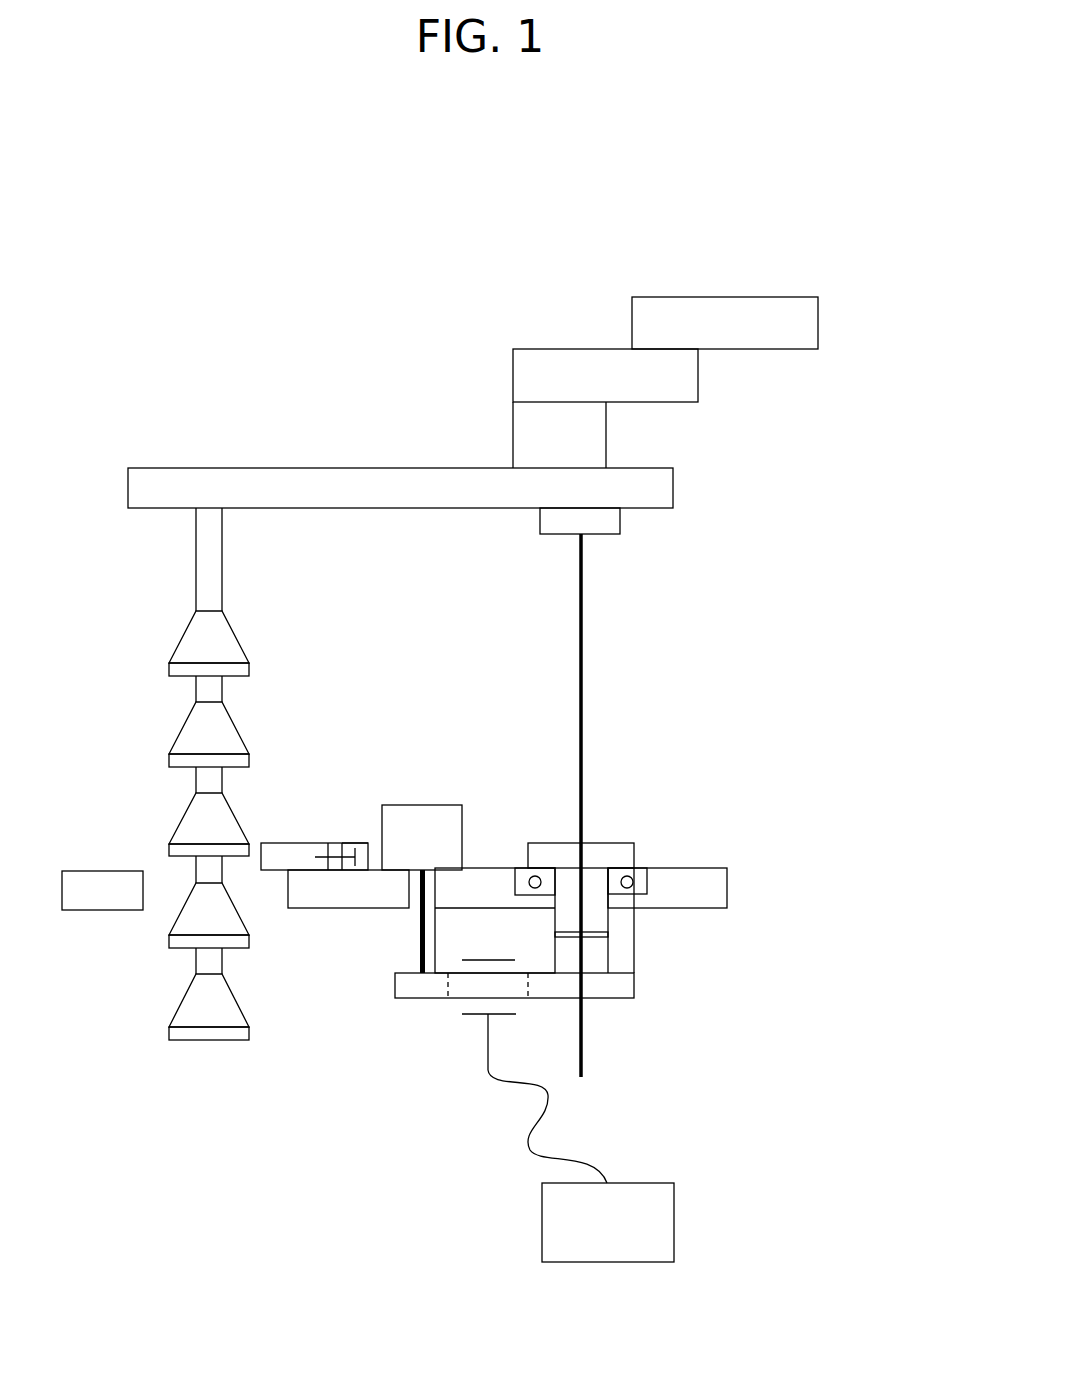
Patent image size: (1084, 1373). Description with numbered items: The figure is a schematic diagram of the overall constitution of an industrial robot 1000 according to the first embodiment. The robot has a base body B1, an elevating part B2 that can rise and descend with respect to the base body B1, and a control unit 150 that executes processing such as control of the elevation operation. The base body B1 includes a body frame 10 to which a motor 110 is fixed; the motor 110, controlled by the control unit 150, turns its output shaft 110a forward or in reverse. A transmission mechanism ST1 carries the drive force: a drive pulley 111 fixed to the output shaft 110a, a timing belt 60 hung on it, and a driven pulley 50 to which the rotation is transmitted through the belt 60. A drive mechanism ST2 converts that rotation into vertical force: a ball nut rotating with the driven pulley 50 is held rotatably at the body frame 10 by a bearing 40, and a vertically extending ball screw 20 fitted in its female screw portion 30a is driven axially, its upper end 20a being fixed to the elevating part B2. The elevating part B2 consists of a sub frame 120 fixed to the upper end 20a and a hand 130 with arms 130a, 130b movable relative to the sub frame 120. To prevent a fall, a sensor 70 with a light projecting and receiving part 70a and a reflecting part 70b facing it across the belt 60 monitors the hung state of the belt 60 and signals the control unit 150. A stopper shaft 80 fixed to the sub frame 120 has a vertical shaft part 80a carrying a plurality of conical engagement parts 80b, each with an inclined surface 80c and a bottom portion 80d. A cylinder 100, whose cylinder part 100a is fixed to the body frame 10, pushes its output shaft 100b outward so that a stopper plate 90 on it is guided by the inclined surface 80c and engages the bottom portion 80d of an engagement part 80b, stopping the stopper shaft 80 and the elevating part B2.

The industrial robot 1000 is at (173, 256).
The body frame 10 is at (705, 868).
The ball screw 20 is at (583, 675).
The upper end 20a is at (578, 540).
The female screw portion 30a is at (606, 852).
The bearing 40 is at (637, 886).
The driven pulley 50 is at (618, 993).
The timing belt 60 is at (458, 992).
The sensor 70 is at (503, 990).
The light projecting and receiving part 70a is at (512, 1014).
The reflecting part 70b is at (487, 960).
The stopper shaft 80 is at (186, 774).
The shaft part 80a is at (196, 592).
The engagement part 80b is at (192, 640).
The inclined surface 80c is at (183, 748).
The bottom portion 80d is at (183, 769).
The stopper plate 90 is at (270, 843).
The cylinder 100 is at (342, 870).
The cylinder part 100a is at (357, 843).
The output shaft 100b is at (336, 857).
The motor 110 is at (425, 805).
The output shaft 110a is at (420, 942).
The drive pulley 111 is at (410, 1000).
The sub frame 120 is at (338, 467).
The hand 130 is at (717, 297).
The arm 130a is at (698, 382).
The arm 130b is at (818, 318).
The control unit 150 is at (600, 1262).
The base body B1 is at (799, 892).
The elevating part B2 is at (783, 432).
The transmission mechanism ST1 is at (374, 1013).
The drive mechanism ST2 is at (603, 590).